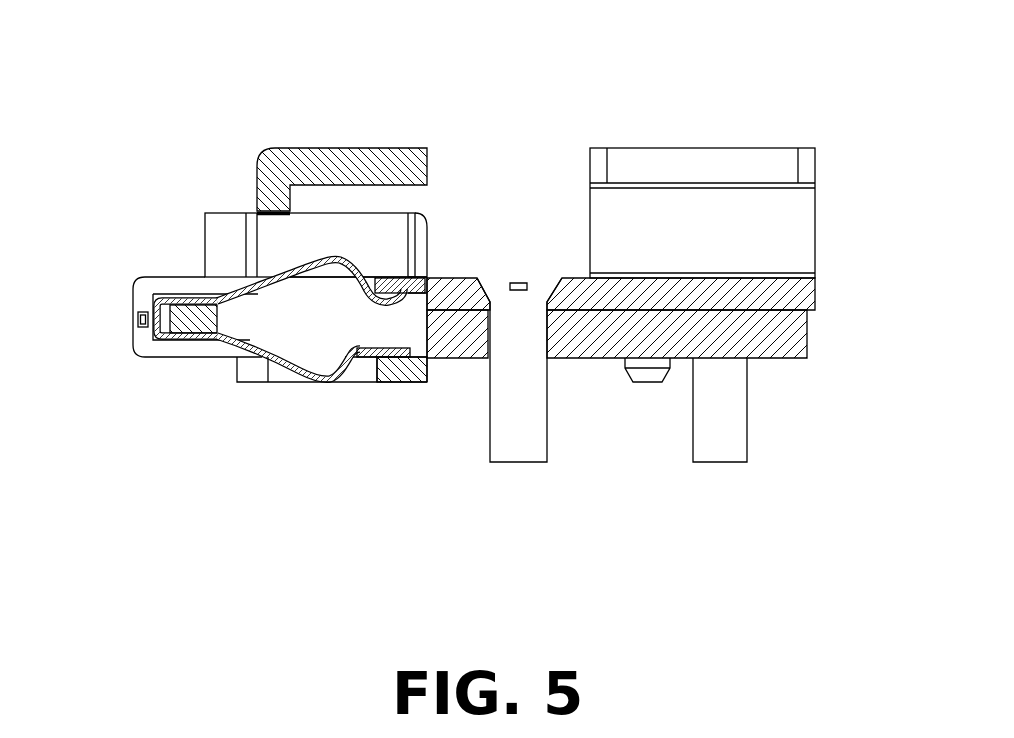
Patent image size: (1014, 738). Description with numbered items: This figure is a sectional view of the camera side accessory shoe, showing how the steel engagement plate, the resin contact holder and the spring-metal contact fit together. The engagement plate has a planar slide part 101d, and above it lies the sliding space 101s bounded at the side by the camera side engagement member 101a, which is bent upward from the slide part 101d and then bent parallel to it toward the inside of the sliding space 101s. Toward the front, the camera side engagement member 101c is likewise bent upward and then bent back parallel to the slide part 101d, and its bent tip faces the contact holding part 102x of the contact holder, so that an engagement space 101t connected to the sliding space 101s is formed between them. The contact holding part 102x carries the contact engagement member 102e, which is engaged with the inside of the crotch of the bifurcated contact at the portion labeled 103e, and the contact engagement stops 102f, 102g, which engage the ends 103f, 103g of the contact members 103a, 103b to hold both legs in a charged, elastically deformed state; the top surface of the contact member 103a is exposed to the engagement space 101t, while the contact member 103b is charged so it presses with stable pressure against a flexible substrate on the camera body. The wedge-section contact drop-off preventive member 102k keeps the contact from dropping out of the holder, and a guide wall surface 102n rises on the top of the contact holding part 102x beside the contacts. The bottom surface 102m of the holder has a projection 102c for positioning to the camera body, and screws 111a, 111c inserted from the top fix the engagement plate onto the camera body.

The camera side engagement member 101a is at (710, 163).
The camera side engagement member 101c is at (360, 155).
The slide part 101d is at (788, 275).
The sliding space 101s is at (561, 228).
The engagement space 101t is at (430, 192).
The projection 102c is at (648, 375).
The contact engagement member 102e is at (197, 322).
The contact engagement stop 102f is at (410, 290).
The contact engagement stop 102g is at (398, 352).
The contact drop-off preventive member 102k is at (133, 333).
The bottom surface 102m is at (588, 360).
The guide wall surface 102n is at (380, 240).
The contact holding part 102x is at (328, 262).
The contact member 103a is at (338, 258).
The contact member 103b is at (327, 382).
The clip end portion of contact 103e is at (192, 300).
The end of contact member 103f is at (403, 303).
The end of contact member 103g is at (388, 352).
The screw 111a is at (738, 415).
The screw 111c is at (516, 282).